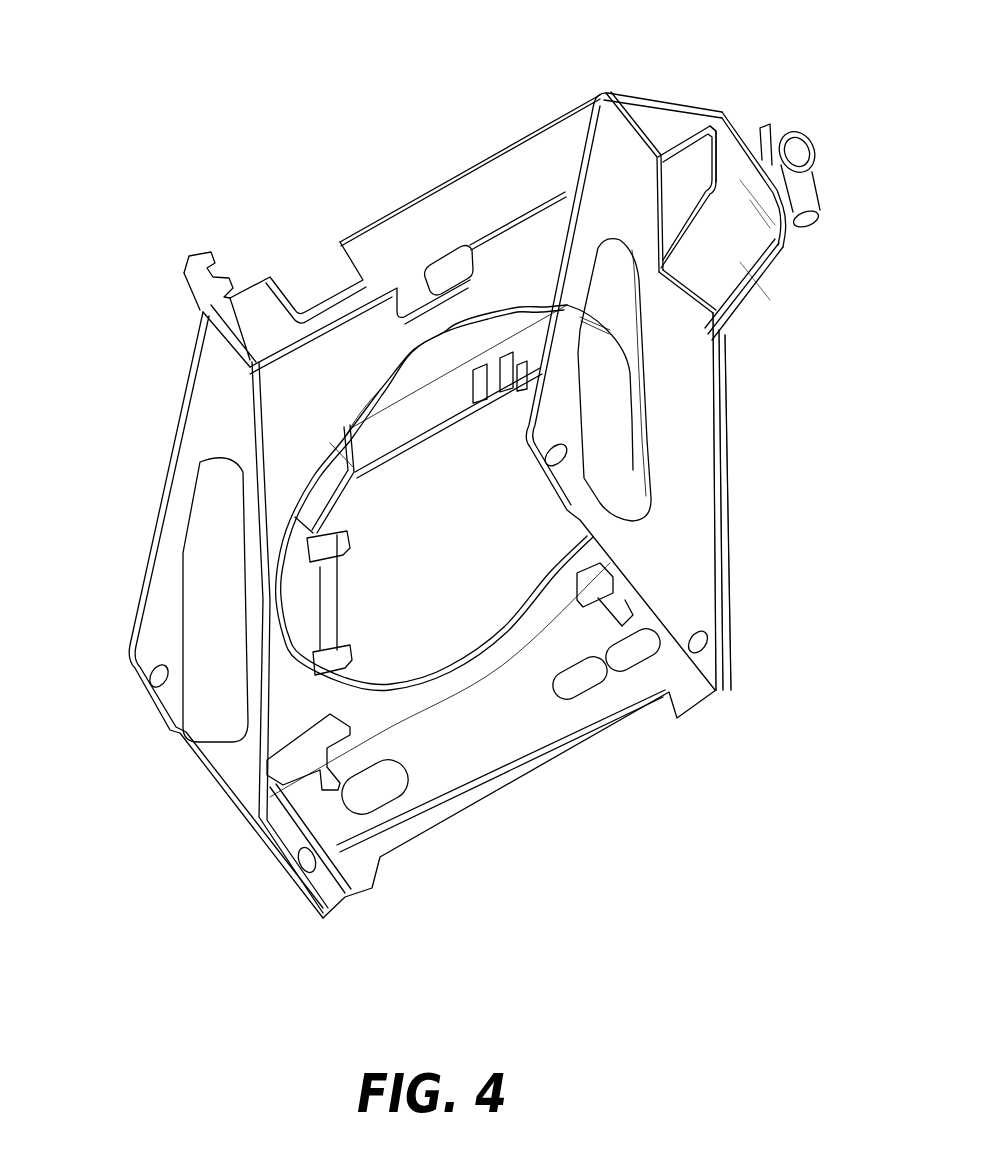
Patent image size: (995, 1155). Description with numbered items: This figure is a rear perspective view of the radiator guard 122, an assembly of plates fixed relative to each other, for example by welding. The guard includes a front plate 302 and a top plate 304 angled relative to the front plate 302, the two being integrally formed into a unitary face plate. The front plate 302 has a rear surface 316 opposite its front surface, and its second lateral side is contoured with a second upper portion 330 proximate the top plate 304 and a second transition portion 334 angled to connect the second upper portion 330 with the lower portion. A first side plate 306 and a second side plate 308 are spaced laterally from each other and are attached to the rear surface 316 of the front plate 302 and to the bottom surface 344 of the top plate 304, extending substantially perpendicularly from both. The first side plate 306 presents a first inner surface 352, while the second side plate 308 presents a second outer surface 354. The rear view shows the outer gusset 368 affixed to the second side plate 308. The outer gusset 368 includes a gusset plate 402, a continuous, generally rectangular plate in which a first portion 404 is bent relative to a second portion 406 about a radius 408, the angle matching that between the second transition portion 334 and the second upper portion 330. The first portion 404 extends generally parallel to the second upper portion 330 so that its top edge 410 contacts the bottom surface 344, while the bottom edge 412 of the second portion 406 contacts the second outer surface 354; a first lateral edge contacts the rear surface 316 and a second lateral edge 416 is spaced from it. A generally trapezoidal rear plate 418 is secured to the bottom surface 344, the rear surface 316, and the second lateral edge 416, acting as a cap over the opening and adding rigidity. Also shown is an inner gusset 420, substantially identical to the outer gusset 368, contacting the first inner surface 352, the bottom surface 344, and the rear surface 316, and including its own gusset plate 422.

The radiator guard 122 is at (183, 150).
The top plate 304 is at (396, 178).
The first side plate 306 is at (142, 496).
The bottom surface 344 is at (647, 108).
The rear plate 418 is at (680, 168).
The second lateral edge 416 is at (716, 126).
The top edge 410 is at (727, 140).
The second upper portion 330 is at (787, 218).
The first portion 404 is at (723, 187).
The radius 408 is at (747, 188).
The gusset plate 402 is at (723, 250).
The outer gusset 368 is at (751, 287).
The second transition portion 334 is at (715, 290).
The second portion 406 is at (727, 323).
The rear surface 316 is at (734, 335).
The bottom edge 412 is at (727, 348).
The second outer surface 354 is at (684, 435).
The front plate 302 is at (434, 459).
The inner gusset 420 is at (363, 486).
The second side plate 308 is at (536, 520).
The gusset plate 422 is at (327, 487).
The first inner surface 352 is at (300, 583).